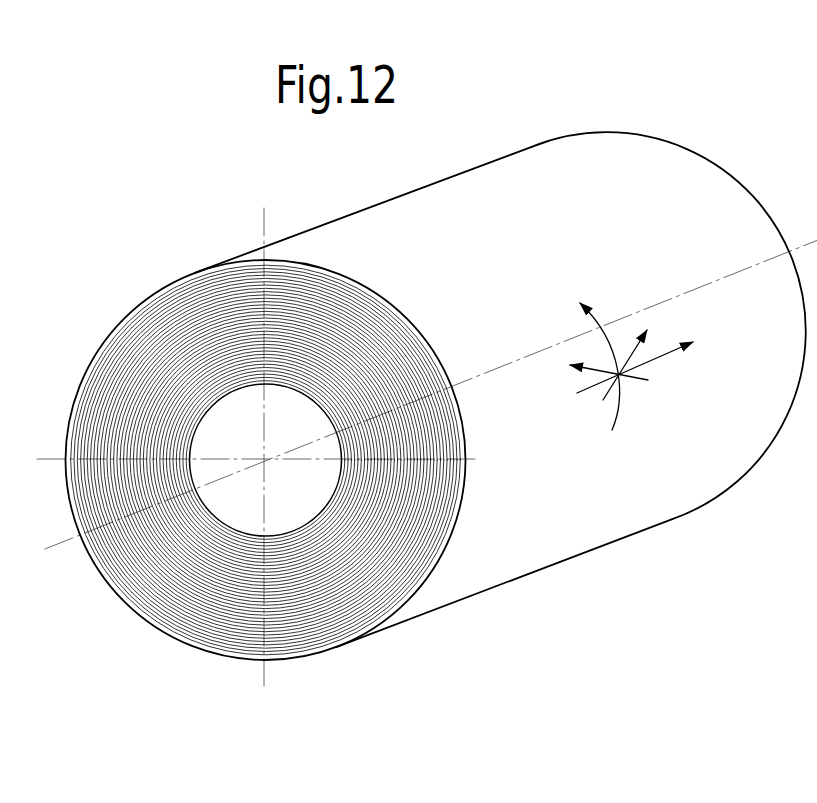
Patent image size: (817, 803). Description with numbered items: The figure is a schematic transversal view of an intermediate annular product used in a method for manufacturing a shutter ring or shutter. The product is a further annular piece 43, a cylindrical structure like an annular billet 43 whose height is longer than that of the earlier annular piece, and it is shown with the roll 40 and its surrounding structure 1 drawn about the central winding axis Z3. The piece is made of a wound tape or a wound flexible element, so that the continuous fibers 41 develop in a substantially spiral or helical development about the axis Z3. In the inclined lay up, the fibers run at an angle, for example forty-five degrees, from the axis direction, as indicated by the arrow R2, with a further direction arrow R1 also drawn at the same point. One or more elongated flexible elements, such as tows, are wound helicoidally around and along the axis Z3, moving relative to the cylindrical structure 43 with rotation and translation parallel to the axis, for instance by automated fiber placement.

The product / rolled sheet material 1 is at (171, 460).
The roll 40 is at (436, 402).
The continuous fibers 41 is at (155, 373).
The further annular piece 43 is at (572, 578).
The axis Z3 is at (65, 548).
The first direction R1 is at (602, 320).
The arrow R2 is at (635, 350).